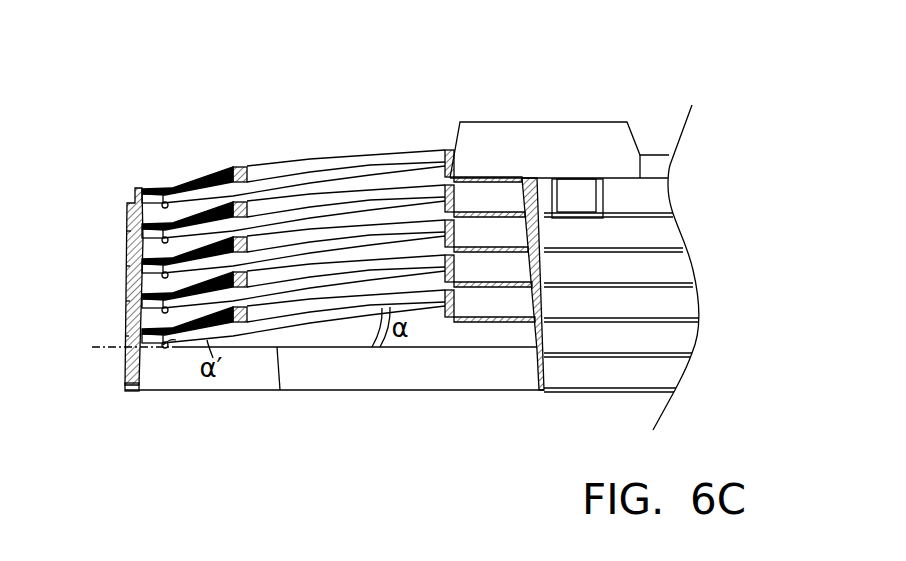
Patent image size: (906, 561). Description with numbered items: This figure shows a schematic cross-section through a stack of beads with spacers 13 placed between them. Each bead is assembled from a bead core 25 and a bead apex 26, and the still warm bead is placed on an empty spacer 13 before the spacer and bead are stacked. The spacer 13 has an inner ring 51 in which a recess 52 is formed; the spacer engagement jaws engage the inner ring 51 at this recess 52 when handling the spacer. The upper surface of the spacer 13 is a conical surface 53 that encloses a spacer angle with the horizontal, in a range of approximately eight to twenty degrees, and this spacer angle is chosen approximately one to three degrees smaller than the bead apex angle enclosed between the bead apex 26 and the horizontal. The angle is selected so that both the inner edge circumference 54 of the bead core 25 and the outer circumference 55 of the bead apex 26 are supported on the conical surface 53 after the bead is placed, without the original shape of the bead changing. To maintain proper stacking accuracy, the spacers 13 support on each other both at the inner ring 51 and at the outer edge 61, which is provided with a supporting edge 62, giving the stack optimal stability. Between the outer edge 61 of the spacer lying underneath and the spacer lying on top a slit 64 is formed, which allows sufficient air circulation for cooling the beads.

The spacer 13 is at (419, 128).
The bead core 25 is at (237, 166).
The bead apex 26 is at (198, 182).
The inner ring 51 is at (640, 208).
The recess 52 is at (573, 200).
The conical surface 53 is at (374, 158).
The inner edge circumference 54 is at (250, 335).
The outer circumference 55 is at (170, 346).
The outer edge 61 is at (137, 190).
The supporting edge 62 is at (143, 203).
The slit 64 is at (152, 216).